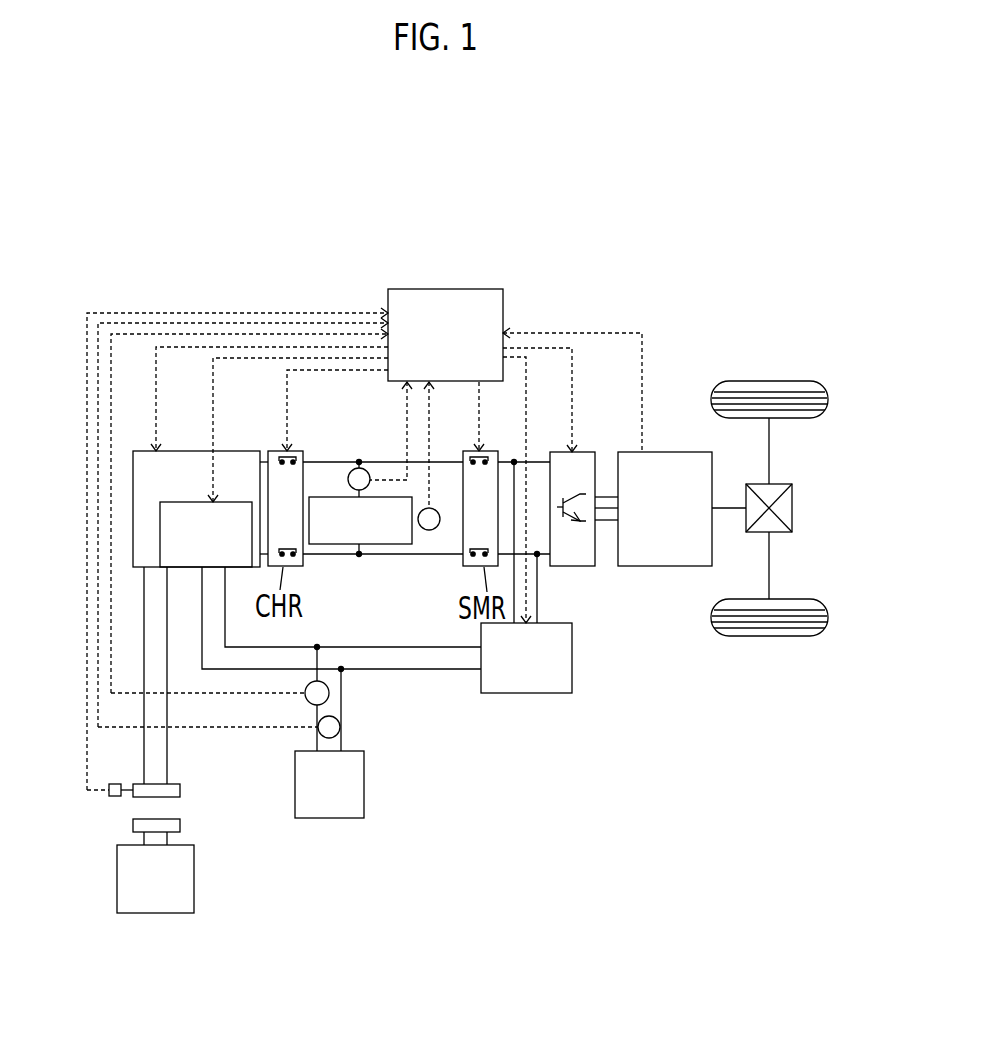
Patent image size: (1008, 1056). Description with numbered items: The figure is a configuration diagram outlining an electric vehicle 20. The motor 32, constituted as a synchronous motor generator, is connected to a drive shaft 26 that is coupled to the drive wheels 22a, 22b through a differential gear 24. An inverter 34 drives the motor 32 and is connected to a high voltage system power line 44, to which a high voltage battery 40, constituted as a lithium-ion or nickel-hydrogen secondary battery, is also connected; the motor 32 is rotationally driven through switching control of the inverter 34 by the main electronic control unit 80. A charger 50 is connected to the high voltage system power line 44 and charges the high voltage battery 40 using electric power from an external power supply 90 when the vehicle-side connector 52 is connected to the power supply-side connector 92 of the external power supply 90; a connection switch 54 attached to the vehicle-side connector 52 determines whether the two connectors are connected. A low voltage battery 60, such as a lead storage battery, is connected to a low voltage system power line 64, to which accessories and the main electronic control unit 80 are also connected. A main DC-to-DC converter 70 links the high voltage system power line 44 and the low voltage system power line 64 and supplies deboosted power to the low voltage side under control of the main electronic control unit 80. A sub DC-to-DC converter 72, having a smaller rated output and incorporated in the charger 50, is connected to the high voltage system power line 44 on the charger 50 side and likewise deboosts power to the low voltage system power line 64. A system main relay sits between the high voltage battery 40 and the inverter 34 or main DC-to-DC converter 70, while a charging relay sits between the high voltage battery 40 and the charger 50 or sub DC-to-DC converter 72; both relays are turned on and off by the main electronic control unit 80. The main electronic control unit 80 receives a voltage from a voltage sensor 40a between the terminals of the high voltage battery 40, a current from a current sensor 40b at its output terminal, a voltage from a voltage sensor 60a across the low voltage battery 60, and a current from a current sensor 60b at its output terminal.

The electric vehicle 20 is at (618, 264).
The drive wheel 22a is at (769, 381).
The drive wheel 22b is at (770, 637).
The differential gear 24 is at (778, 484).
The drive shaft 26 is at (722, 506).
The motor 32 is at (660, 452).
The inverter 34 is at (582, 451).
The high voltage battery 40 is at (350, 544).
The voltage sensor 40a is at (428, 531).
The current sensor 40b is at (364, 463).
The high voltage system power line 44 is at (447, 553).
The charger 50 is at (190, 450).
The vehicle-side connector 52 is at (181, 791).
The connection switch 54 is at (114, 784).
The low voltage battery 60 is at (328, 818).
The voltage sensor 60a is at (341, 727).
The current sensor 60b is at (330, 693).
The low voltage system power line 64 is at (366, 669).
The main DC-to-DC converter 70 is at (523, 694).
The sub DC-to-DC converter 72 is at (235, 502).
The main electronic control unit 80 is at (457, 289).
The external power supply 90 is at (195, 880).
The power supply-side connector 92 is at (181, 826).